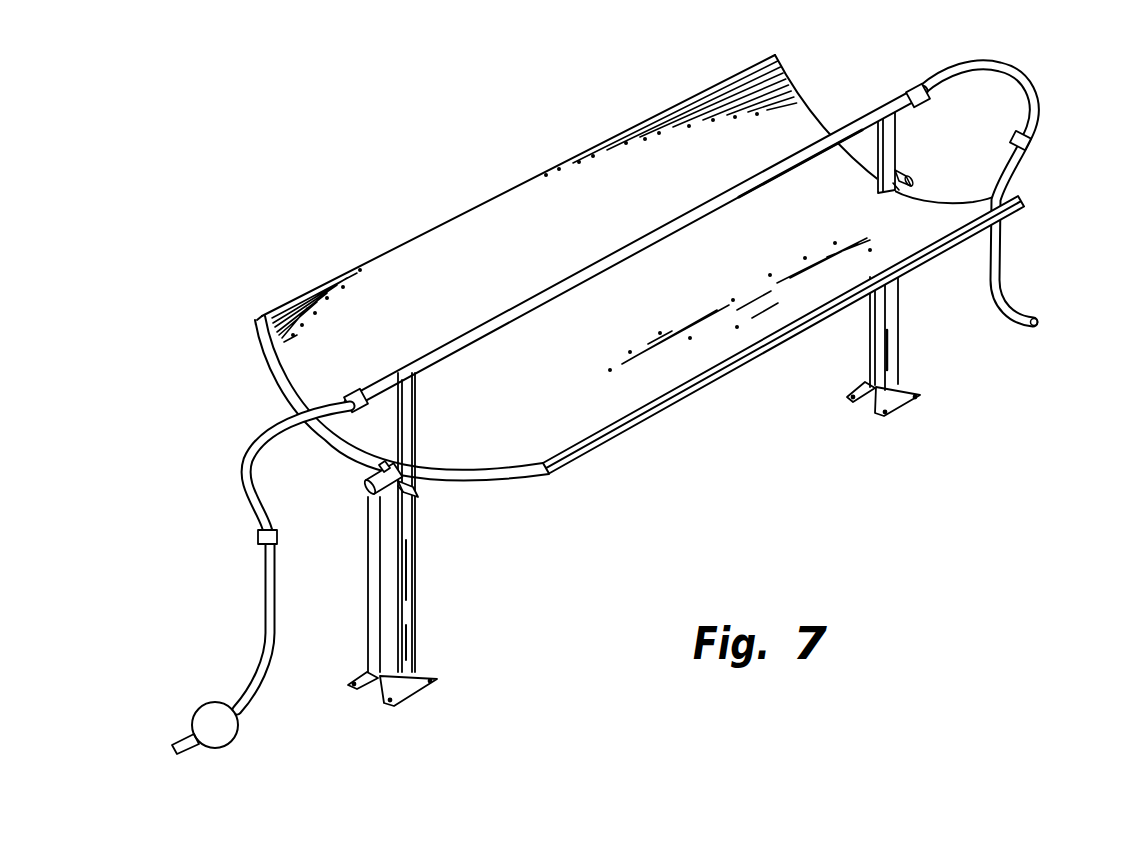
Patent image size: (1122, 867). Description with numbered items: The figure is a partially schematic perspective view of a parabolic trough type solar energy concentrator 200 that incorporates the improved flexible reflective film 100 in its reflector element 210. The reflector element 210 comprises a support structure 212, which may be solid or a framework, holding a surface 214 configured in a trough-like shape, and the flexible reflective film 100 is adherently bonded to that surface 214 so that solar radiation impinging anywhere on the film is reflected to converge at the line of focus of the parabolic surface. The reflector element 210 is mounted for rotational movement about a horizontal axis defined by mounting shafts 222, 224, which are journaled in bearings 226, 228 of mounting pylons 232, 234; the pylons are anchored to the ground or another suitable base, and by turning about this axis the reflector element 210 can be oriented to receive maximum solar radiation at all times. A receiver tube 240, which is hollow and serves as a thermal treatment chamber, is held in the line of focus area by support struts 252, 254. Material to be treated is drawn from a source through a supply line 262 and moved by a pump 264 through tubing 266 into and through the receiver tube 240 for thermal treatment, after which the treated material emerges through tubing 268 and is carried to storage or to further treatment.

The flexible reflective film 100 is at (630, 415).
The parabolic trough type solar energy concentrator 200 is at (735, 400).
The reflector element 210 is at (520, 482).
The support structure 212 is at (262, 358).
The surface 214 is at (667, 395).
The mounting shaft 222 is at (368, 482).
The mounting shaft 224 is at (905, 170).
The bearing 226 is at (412, 497).
The bearing 228 is at (898, 172).
The mounting pylon 232 is at (413, 622).
The mounting pylon 234 is at (898, 332).
The receiver tube 240 is at (657, 237).
The support strut 252 is at (414, 425).
The support strut 254 is at (879, 150).
The supply line 262 is at (183, 733).
The pump 264 is at (236, 735).
The tubing 266 is at (263, 573).
The tubing 268 is at (1013, 165).